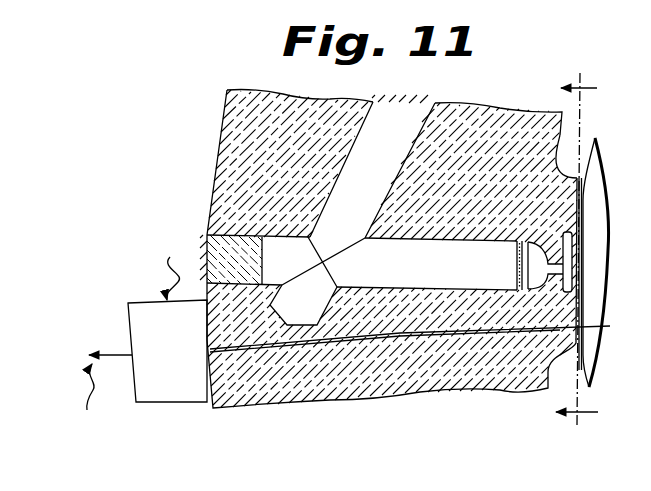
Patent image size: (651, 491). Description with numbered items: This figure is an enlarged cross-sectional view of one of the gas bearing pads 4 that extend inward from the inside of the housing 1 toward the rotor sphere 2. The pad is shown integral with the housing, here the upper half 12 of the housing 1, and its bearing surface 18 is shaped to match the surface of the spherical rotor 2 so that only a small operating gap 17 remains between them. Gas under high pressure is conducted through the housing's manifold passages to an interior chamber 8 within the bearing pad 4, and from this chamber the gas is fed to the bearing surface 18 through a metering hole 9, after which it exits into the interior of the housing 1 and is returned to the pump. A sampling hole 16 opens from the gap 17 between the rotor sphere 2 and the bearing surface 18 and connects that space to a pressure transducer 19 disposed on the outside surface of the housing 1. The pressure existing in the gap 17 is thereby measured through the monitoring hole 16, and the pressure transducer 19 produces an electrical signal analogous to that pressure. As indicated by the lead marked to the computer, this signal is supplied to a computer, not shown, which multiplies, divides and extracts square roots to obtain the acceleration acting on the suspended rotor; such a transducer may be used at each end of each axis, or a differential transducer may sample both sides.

The housing 1 is at (221, 119).
The rotor sphere 2 is at (604, 157).
The gas bearing pad 4 is at (572, 176).
The interior chamber 8 is at (430, 283).
The metering hole 9 is at (563, 268).
The upper half of the housing 12 is at (560, 249).
The sampling hole 16 is at (381, 342).
The gap 17 is at (421, 333).
The bearing surface 18 is at (578, 209).
The pressure transducer 19 is at (130, 318).